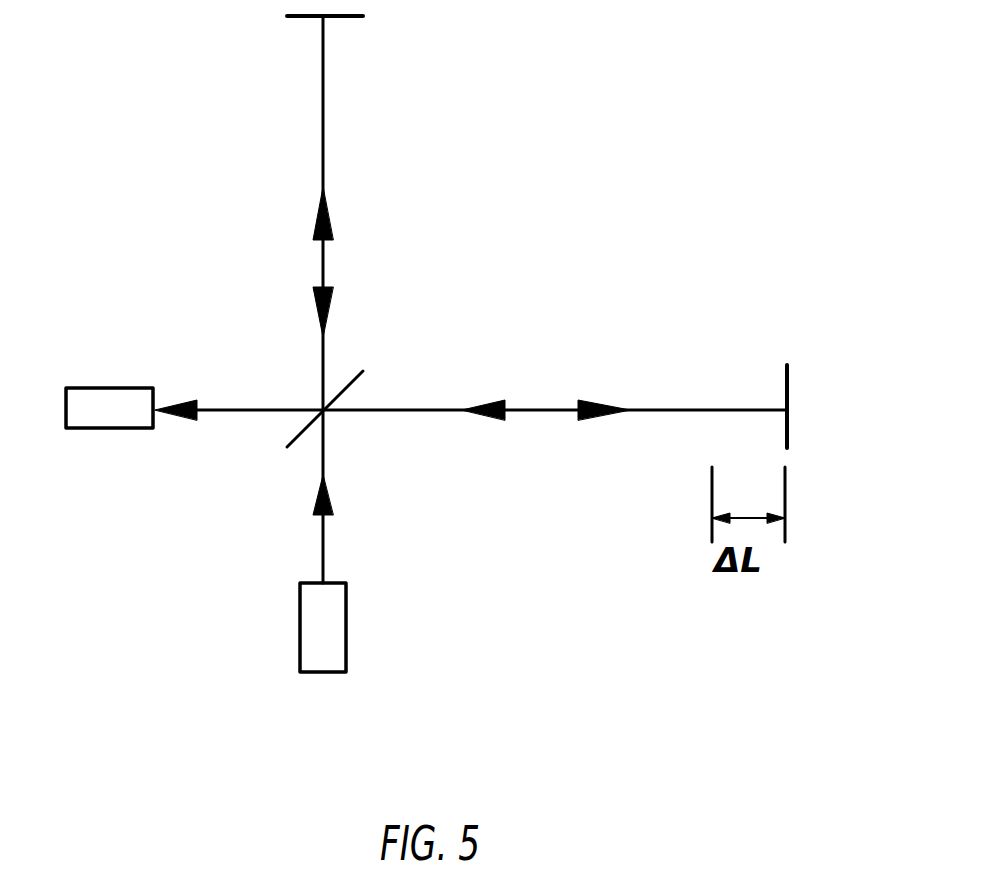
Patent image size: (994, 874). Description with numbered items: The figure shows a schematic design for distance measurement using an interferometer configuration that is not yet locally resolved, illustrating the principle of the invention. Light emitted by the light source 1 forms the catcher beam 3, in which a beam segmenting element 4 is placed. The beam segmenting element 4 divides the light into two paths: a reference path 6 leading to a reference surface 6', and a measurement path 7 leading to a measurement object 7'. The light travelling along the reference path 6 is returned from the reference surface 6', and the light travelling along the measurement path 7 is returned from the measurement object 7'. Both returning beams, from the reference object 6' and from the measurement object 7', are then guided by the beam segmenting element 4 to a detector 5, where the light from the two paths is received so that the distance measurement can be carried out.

The light source 1 is at (360, 648).
The catcher beam 3 is at (324, 555).
The beam segmenting element 4 is at (289, 445).
The detector 5 is at (97, 403).
The reference path 6 is at (279, 213).
The reference surface 6' is at (362, 54).
The measurement path 7 is at (555, 465).
The measurement object 7' is at (849, 394).